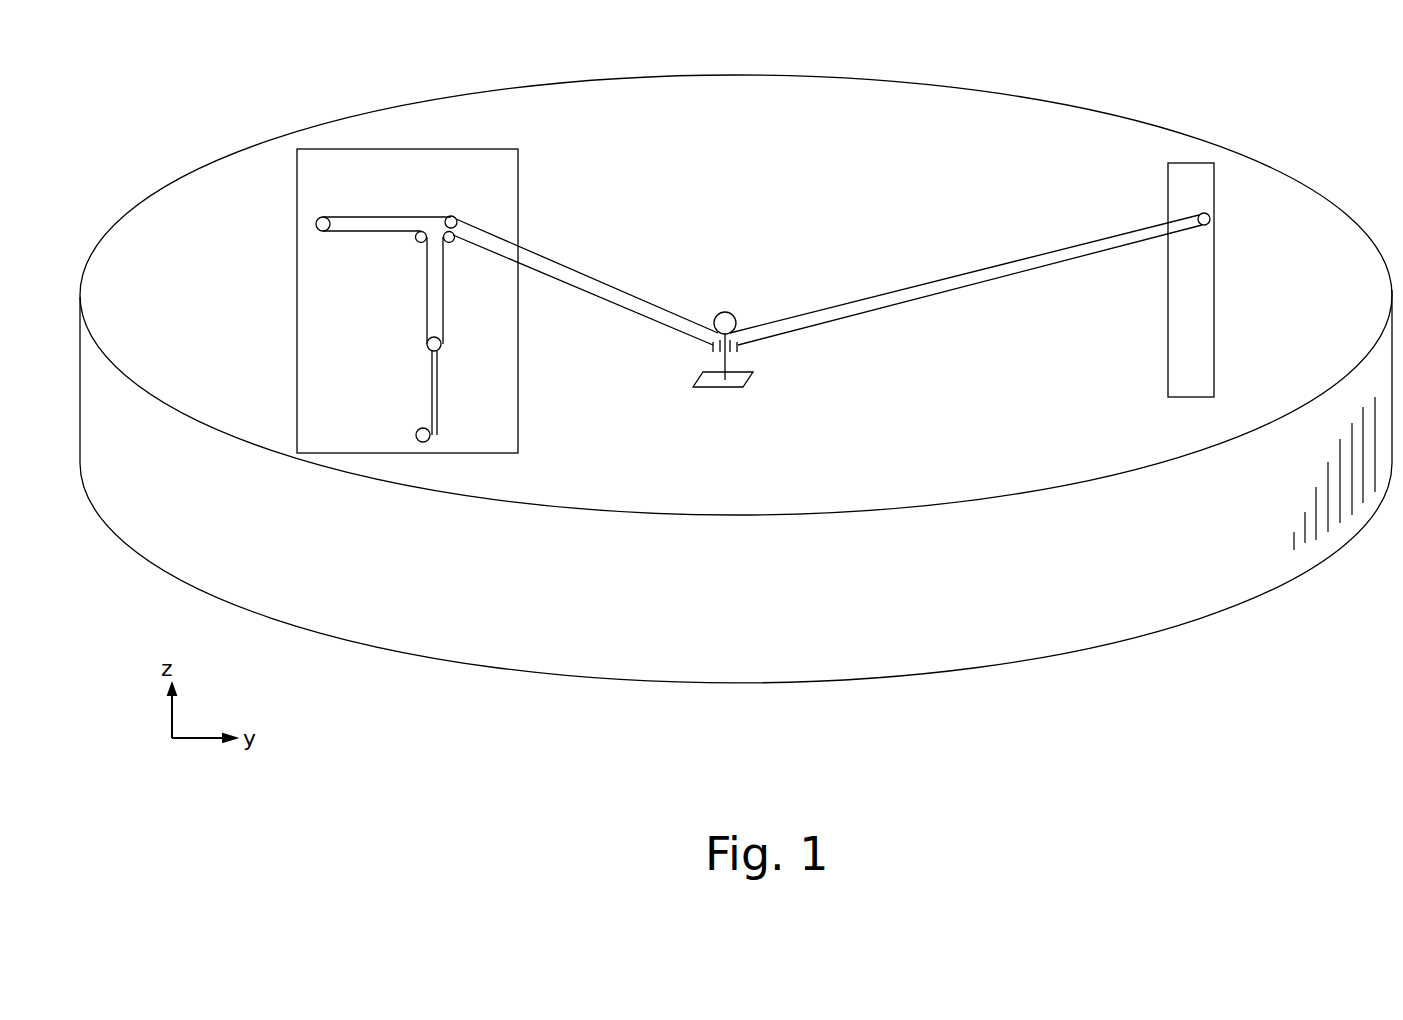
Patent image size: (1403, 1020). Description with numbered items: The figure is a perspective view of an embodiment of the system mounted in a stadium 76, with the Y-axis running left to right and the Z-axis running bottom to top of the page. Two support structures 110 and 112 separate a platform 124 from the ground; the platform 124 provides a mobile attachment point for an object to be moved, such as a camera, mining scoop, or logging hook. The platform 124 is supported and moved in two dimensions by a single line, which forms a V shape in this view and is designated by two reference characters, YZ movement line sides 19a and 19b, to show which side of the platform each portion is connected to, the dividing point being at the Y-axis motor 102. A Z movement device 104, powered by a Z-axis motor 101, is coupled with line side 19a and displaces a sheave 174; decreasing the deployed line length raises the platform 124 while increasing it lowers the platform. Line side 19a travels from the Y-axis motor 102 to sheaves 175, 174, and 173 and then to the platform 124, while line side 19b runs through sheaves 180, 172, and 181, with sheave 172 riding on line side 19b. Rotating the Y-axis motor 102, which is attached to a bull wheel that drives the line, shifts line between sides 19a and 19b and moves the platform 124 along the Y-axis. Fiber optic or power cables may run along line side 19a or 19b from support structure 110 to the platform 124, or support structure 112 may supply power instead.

The stadium 76 is at (901, 684).
The support structure 110 is at (290, 344).
The support structure 112 is at (1222, 328).
The YZ movement line side 19a is at (350, 237).
The YZ movement line side 19b is at (378, 212).
The Y-axis motor 102 is at (322, 212).
The sheave 180 is at (458, 218).
The sheave 175 is at (415, 242).
The sheave 173 is at (453, 243).
The sheave 174 is at (418, 341).
The Z movement device 104 is at (415, 363).
The Z-axis motor 101 is at (411, 433).
The sheave 172 is at (716, 310).
The platform 124 is at (762, 381).
The sheave 181 is at (1200, 212).